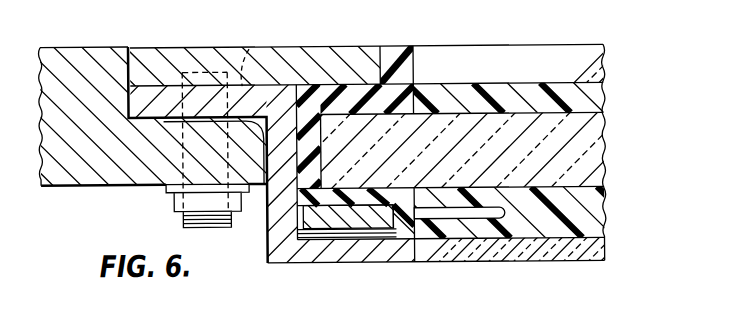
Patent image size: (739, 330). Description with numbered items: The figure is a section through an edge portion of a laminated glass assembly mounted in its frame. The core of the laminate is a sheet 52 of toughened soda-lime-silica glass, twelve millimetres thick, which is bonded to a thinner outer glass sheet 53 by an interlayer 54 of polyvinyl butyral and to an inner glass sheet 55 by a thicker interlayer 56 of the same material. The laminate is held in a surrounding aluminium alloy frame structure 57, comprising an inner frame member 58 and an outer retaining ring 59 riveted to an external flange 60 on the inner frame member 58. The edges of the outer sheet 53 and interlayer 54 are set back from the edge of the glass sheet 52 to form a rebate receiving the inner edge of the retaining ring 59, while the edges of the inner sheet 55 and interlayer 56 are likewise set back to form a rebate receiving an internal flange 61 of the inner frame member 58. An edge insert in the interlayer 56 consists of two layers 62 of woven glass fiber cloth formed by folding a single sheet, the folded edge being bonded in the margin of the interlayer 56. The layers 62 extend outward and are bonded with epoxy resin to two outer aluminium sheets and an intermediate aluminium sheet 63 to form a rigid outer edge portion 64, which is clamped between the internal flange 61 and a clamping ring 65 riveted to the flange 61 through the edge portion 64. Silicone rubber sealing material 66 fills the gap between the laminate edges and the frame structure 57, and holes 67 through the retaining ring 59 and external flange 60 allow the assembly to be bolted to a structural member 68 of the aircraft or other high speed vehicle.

The glass sheet 52 is at (577, 149).
The outer glass sheet 53 is at (607, 27).
The interlayer 54 is at (573, 97).
The inner glass sheet 55 is at (577, 267).
The interlayer 56 is at (573, 209).
The frame structure 57 is at (288, 86).
The inner frame member 58 is at (271, 192).
The outer retaining ring 59 is at (291, 62).
The external flange 60 is at (155, 93).
The internal flange 61 is at (373, 248).
The layers of woven glass fiber cloth 62 is at (485, 211).
The aluminium sheets 63 is at (300, 244).
The rigid outer edge portion 64 is at (364, 266).
The clamping ring 65 is at (400, 240).
The silicone rubber sealing material 66 is at (391, 78).
The holes 67 is at (253, 39).
The structural member 68 is at (88, 160).